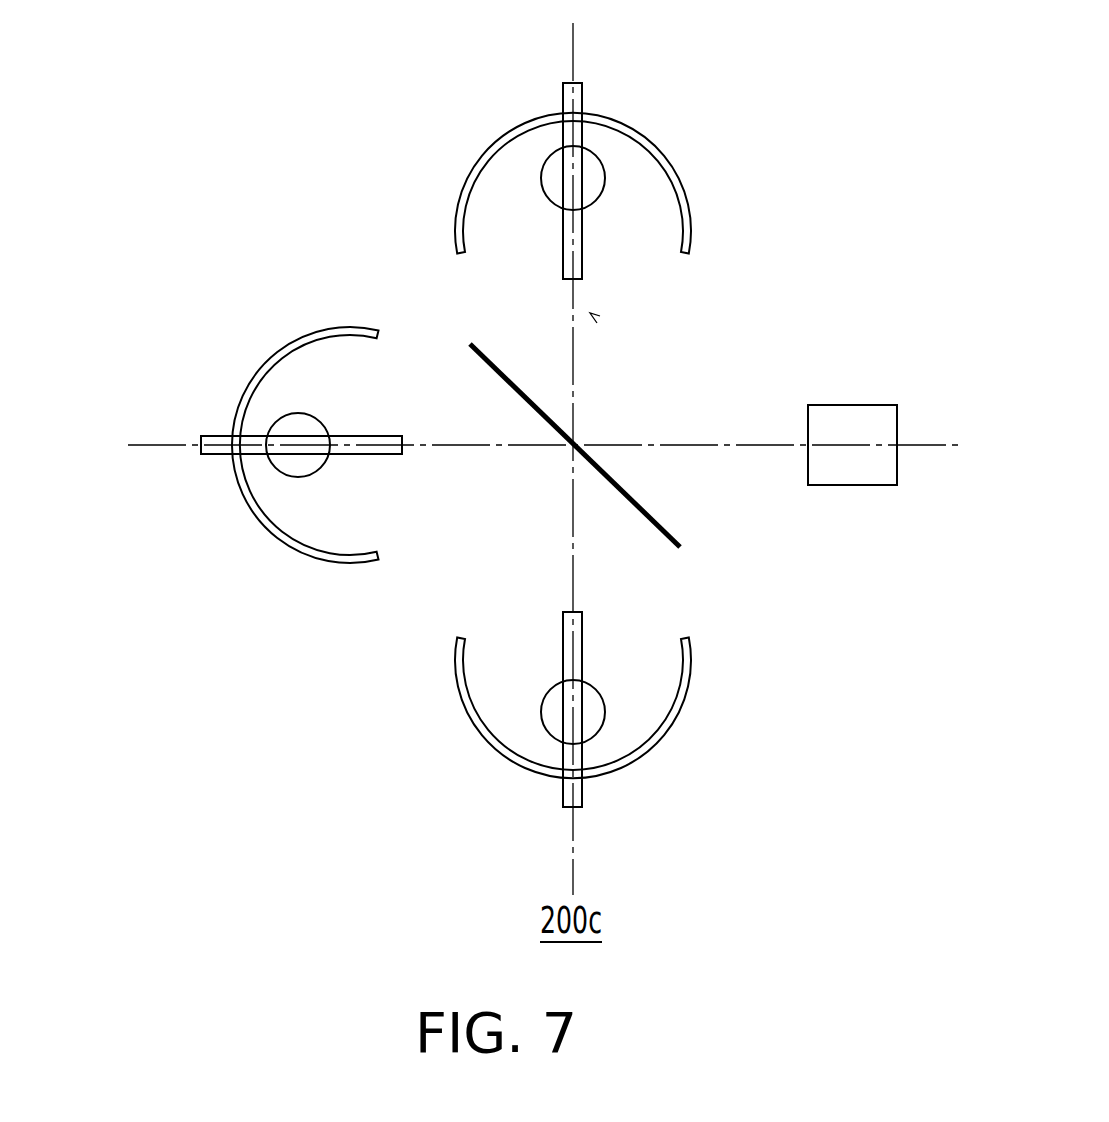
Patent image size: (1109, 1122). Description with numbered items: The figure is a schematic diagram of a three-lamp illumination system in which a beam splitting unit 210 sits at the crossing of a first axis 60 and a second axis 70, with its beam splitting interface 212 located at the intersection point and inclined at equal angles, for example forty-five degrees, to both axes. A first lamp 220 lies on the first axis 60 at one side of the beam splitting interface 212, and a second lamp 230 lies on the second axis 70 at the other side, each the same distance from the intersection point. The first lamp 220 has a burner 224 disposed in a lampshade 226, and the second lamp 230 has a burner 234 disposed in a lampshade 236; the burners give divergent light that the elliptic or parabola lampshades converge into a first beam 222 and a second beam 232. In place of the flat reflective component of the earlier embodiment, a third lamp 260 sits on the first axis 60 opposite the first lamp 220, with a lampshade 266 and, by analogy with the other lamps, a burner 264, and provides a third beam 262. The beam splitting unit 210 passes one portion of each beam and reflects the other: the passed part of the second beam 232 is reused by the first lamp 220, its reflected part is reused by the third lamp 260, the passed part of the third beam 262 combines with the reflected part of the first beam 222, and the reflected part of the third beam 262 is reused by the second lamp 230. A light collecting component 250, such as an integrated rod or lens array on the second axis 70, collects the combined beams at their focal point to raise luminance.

The first axis 60 is at (574, 47).
The second axis 70 is at (942, 443).
The beam splitting unit 210 is at (621, 483).
The beam splitting interface 212 is at (646, 551).
The first lamp 220 is at (677, 181).
The first beam 222 is at (600, 316).
The burner 224 is at (590, 172).
The lampshade 226 is at (650, 151).
The second lamp 230 is at (676, 709).
The second beam 232 is at (556, 578).
The burner 234 is at (645, 746).
The lampshade 236 is at (590, 722).
The light collecting component 250 is at (850, 470).
The third lamp 260 is at (241, 451).
The third beam 262 is at (452, 435).
The third light emitting element 264 is at (295, 462).
The lampshade 266 is at (278, 525).